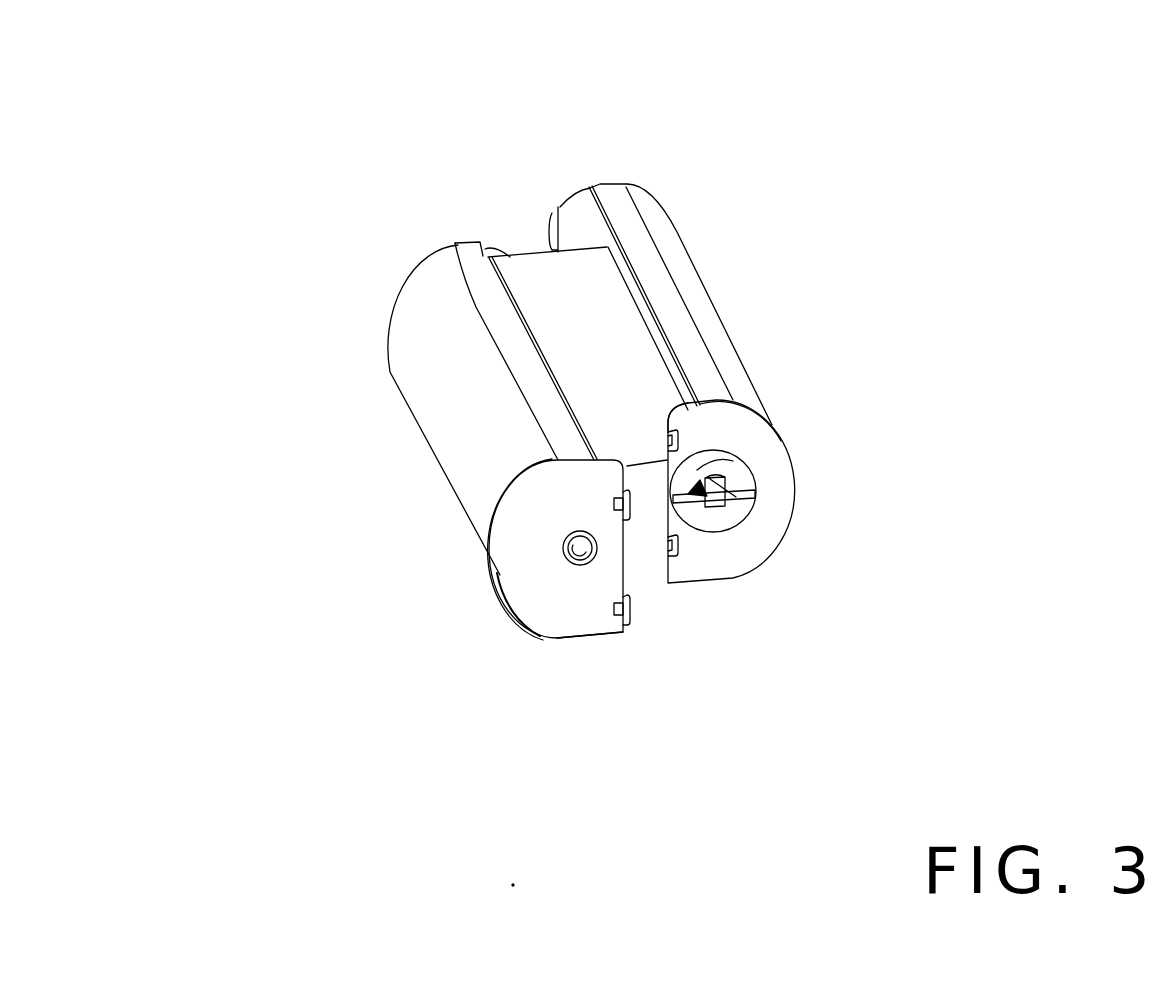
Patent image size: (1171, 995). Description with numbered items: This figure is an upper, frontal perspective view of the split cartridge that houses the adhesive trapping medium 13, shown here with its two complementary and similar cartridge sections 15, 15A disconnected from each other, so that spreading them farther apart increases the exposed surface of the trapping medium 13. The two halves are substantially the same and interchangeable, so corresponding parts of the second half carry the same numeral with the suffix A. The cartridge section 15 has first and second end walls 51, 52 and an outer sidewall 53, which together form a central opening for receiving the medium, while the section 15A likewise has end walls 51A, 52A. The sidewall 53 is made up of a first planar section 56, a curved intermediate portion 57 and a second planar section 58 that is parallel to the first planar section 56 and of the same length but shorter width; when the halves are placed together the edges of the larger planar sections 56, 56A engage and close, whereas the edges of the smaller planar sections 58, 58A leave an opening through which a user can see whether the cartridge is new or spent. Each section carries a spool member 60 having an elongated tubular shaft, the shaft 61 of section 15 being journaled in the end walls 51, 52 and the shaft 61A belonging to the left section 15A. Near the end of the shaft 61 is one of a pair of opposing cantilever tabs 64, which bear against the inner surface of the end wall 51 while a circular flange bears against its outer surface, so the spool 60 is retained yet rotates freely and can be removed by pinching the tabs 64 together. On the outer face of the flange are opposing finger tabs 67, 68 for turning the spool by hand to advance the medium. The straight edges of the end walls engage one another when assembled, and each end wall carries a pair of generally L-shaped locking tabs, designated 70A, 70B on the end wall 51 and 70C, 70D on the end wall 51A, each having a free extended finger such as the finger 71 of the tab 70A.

The trapping medium 13 is at (545, 268).
The first cartridge section 15 is at (748, 288).
The second cartridge section 15A is at (418, 495).
The first end wall 51 is at (790, 498).
The first end wall of second section 51A is at (533, 528).
The second end wall 52 is at (572, 214).
The second end wall of second section 52A is at (487, 259).
The outer sidewall 53 is at (677, 229).
The first planar section 56 is at (654, 490).
The first planar section of second section 56A is at (590, 641).
The curved intermediate portion 57 is at (725, 350).
The second planar section 58 is at (618, 196).
The second planar section of second section 58A is at (463, 254).
The spool member 60 is at (752, 510).
The shaft 61 is at (648, 330).
The shaft of second section spool 61A is at (576, 565).
The cantilever tab 64 is at (722, 492).
The finger tab 67 is at (733, 462).
The finger tab 68 is at (762, 487).
The locking tab 70A is at (658, 422).
The locking tab 70B is at (679, 555).
The locking tab 70C is at (631, 520).
The locking tab 70D is at (629, 630).
The free extended finger 71 is at (660, 443).